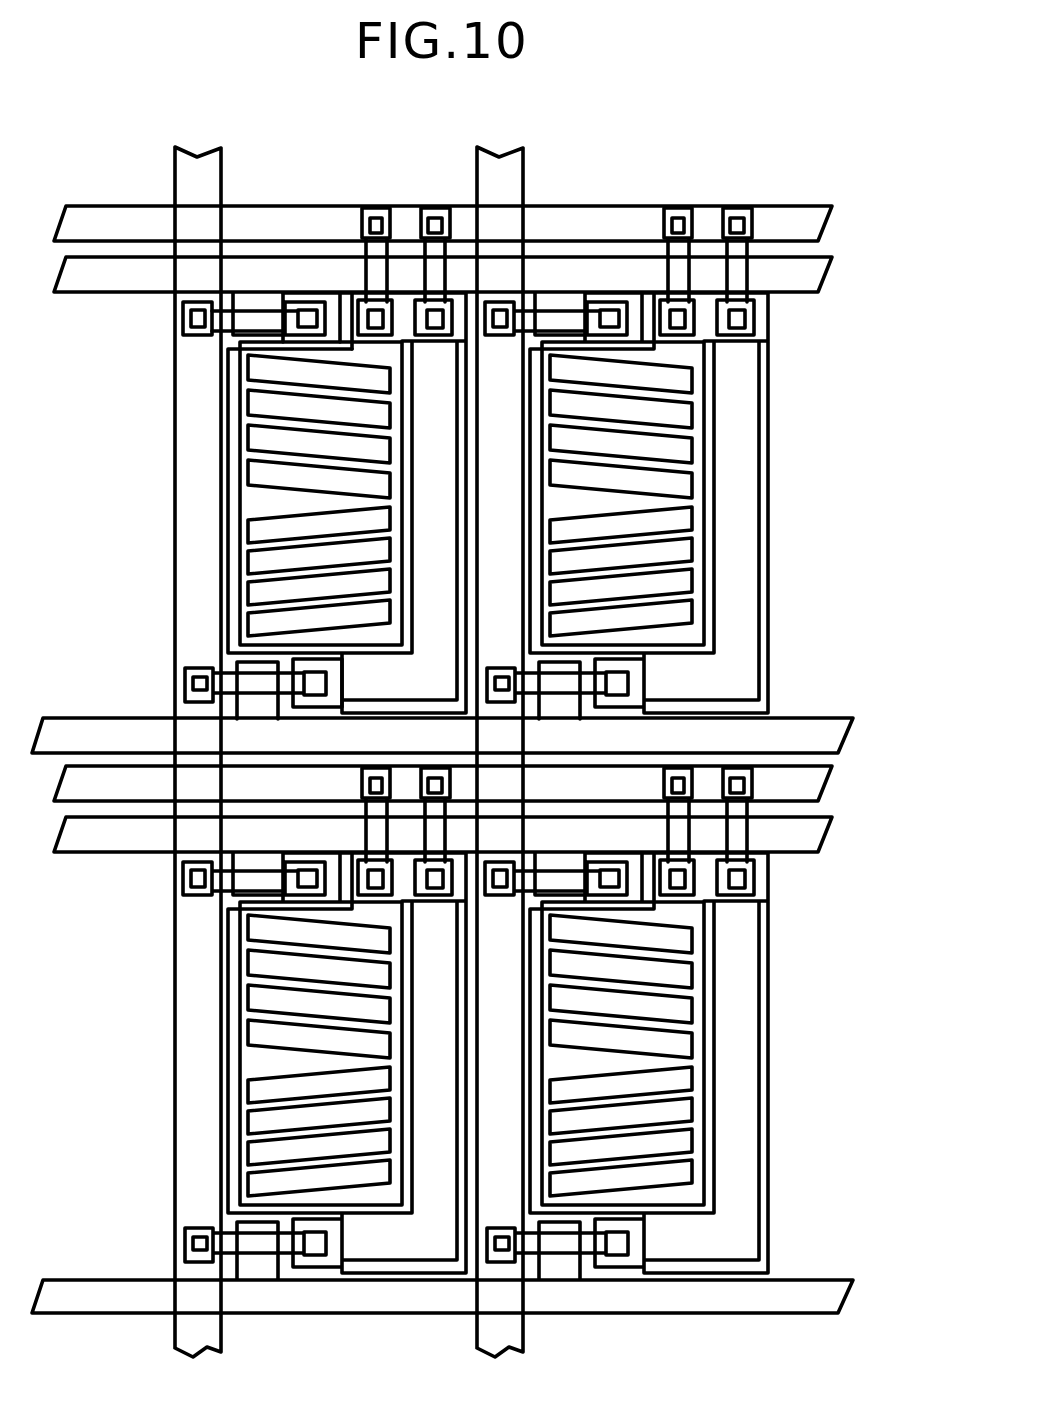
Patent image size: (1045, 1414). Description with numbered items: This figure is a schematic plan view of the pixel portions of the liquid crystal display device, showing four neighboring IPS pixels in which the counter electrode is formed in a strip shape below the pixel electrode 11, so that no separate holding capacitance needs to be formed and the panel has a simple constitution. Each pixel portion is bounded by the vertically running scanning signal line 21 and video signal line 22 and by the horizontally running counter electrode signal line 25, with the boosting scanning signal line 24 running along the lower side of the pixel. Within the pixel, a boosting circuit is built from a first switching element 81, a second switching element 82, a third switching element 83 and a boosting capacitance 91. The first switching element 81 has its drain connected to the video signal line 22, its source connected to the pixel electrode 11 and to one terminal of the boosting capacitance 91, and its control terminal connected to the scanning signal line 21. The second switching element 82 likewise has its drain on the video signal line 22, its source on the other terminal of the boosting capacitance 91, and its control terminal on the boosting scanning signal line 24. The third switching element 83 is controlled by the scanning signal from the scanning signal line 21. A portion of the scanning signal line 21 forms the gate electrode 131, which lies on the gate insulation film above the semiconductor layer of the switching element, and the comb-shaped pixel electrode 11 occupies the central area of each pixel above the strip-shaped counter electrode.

The pixel electrode 11 is at (247, 455).
The scanning signal line 21 is at (320, 280).
The video signal line 22 is at (195, 390).
The boosting scanning signal line 24 is at (822, 732).
The counter electrode signal line 25 is at (608, 232).
The first switching element 81 is at (247, 317).
The second switching element 82 is at (250, 682).
The third switching element 83 is at (432, 262).
The boosting capacitance 91 is at (430, 597).
The gate electrode 131 is at (258, 298).